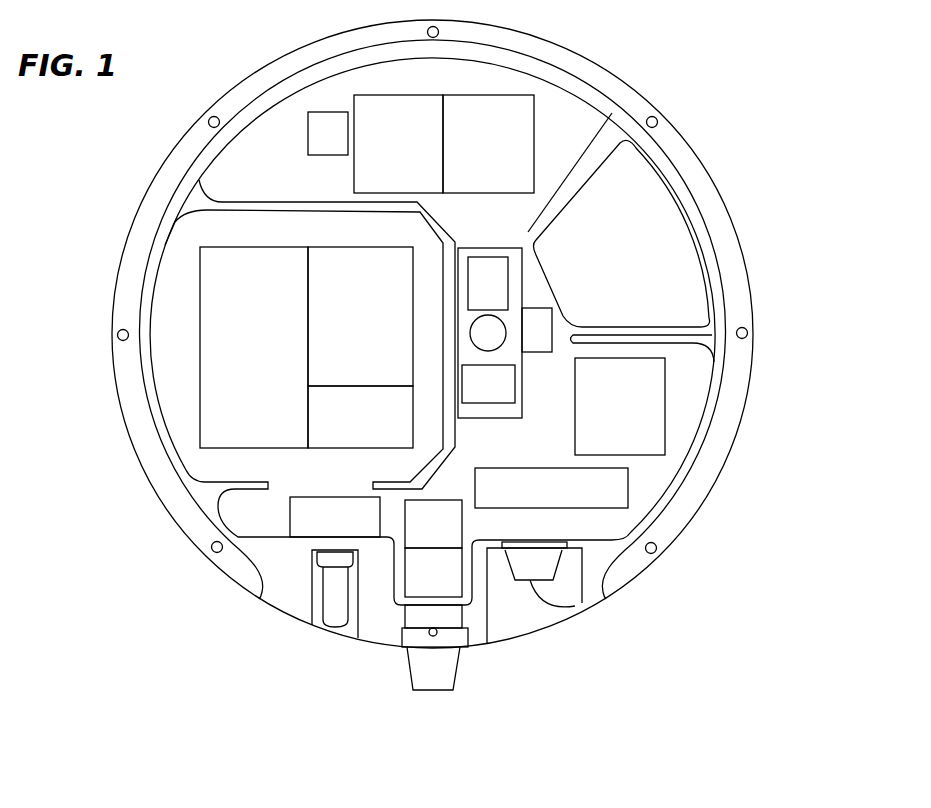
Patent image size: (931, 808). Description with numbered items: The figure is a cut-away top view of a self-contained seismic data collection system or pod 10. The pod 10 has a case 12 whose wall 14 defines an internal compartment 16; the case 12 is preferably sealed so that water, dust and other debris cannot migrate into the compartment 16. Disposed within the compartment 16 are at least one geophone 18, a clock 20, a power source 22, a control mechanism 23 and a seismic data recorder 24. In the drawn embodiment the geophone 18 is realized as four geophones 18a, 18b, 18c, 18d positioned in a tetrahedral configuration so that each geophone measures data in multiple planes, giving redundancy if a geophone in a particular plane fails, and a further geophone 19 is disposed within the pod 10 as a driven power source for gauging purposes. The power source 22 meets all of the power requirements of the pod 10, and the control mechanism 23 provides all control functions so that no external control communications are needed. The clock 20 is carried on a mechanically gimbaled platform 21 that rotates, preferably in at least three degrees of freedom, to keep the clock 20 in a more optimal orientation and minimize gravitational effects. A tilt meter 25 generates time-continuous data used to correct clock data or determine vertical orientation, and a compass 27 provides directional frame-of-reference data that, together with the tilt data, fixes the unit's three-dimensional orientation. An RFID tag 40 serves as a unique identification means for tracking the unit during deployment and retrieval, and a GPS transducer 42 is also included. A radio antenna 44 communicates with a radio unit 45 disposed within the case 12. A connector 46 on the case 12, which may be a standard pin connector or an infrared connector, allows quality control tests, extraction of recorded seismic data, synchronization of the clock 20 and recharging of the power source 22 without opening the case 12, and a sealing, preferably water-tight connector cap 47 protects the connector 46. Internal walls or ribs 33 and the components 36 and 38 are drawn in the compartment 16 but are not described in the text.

The seismic data collection pod 10 is at (750, 204).
The case 12 is at (756, 270).
The wall 14 is at (592, 108).
The compartment 16 is at (297, 118).
The geophone 18 is at (550, 336).
The geophone 18a is at (497, 252).
The geophone 18b is at (503, 344).
The geophone 18c is at (514, 390).
The geophone 18d is at (537, 312).
The geophone 19 is at (342, 147).
The clock 20 is at (374, 330).
The gimbaled platform 21 is at (372, 429).
The power source 22 is at (642, 274).
The control mechanism 23 is at (634, 416).
The seismic data recorder 24 is at (264, 359).
The tilt meter 25 is at (446, 536).
The compass 27 is at (446, 589).
The ribs 33 is at (253, 200).
The component 36 is at (412, 159).
The component 38 is at (502, 159).
The radio frequency identification tag 40 is at (560, 499).
The GPS transducer 42 is at (437, 690).
The radio antennae 44 is at (333, 630).
The radio unit 45 is at (347, 530).
The connector 46 is at (532, 582).
The connector cap 47 is at (583, 603).